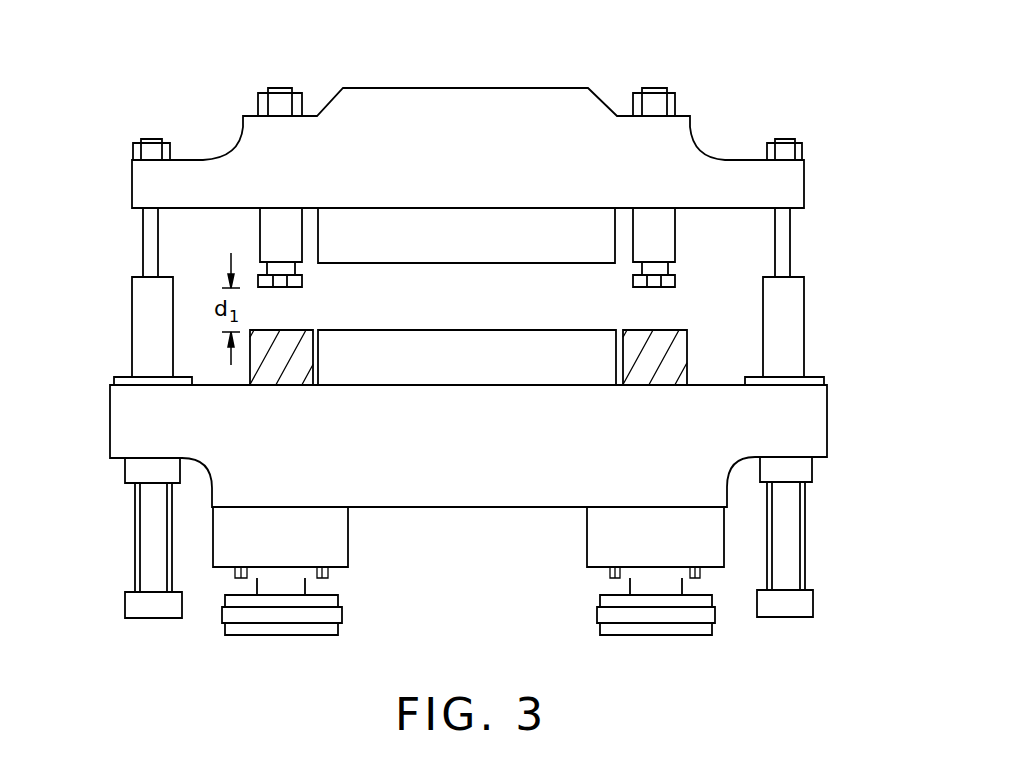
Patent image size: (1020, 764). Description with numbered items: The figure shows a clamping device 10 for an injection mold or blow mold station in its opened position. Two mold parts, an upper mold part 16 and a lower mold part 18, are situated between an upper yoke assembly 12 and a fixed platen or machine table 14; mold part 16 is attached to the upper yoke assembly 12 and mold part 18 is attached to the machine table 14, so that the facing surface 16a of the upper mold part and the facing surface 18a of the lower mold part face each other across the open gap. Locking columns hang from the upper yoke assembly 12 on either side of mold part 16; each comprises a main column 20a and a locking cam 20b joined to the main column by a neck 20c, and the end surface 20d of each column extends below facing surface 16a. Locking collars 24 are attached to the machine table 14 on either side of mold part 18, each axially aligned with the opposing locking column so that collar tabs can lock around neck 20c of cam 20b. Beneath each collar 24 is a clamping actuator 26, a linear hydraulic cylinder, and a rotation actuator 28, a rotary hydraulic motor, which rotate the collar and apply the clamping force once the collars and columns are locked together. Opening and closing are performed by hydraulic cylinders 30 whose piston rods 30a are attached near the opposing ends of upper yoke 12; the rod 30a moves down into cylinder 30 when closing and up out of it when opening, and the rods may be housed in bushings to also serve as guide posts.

The clamping device 10 is at (723, 63).
The upper yoke assembly 12 is at (257, 148).
The fixed platen or machine table 14 is at (472, 488).
The upper mold part 16 is at (472, 253).
The facing surface of upper mold part 16a is at (370, 263).
The lower mold part 18 is at (470, 369).
The facing surface of lower mold part 18a is at (483, 330).
The main column 20a is at (655, 229).
The locking cam 20b is at (667, 288).
The neck 20c is at (657, 268).
The end surface of locking column 20d is at (640, 288).
The locking collar 24 is at (663, 367).
The clamping actuator 26 is at (325, 532).
The rotation actuator 28 is at (327, 613).
The hydraulic cylinder 30 is at (130, 533).
The piston rod 30a is at (150, 240).